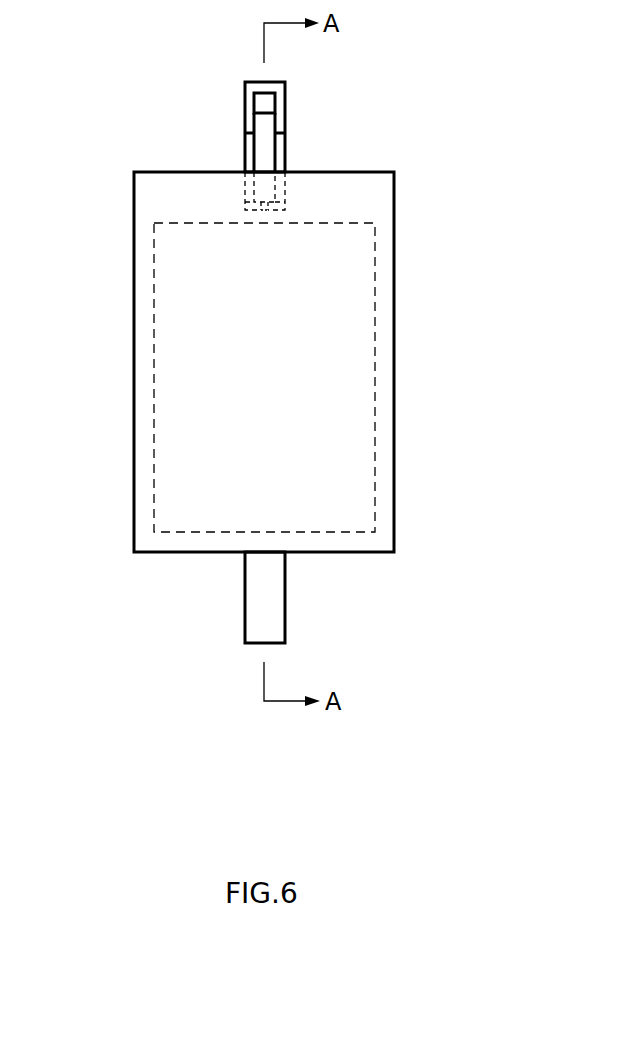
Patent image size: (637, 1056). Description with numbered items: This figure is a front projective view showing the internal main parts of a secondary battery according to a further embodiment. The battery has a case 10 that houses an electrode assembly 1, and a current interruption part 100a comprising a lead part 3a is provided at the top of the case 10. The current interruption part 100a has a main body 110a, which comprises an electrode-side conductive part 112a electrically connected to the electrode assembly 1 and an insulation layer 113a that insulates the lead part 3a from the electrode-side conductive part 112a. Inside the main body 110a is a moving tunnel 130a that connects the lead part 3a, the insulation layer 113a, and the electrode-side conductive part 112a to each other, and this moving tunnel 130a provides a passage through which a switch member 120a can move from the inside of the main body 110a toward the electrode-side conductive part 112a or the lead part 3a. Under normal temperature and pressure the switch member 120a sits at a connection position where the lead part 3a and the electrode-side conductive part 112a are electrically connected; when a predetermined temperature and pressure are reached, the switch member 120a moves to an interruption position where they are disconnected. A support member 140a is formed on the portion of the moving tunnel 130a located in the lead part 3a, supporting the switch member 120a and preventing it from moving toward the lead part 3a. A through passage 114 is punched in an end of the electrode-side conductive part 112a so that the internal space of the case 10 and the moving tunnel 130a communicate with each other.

The current interruption part 100a is at (228, 71).
The case 10 is at (395, 352).
The electrode assembly 1 is at (355, 308).
The main body 110a is at (412, 80).
The lead part 3a is at (277, 103).
The insulation layer 113a is at (277, 151).
The electrode-side conductive part 112a is at (295, 204).
The through passage 114 is at (263, 212).
The support member 140a is at (258, 102).
The switch member 120a is at (256, 133).
The moving tunnel 130a is at (253, 191).